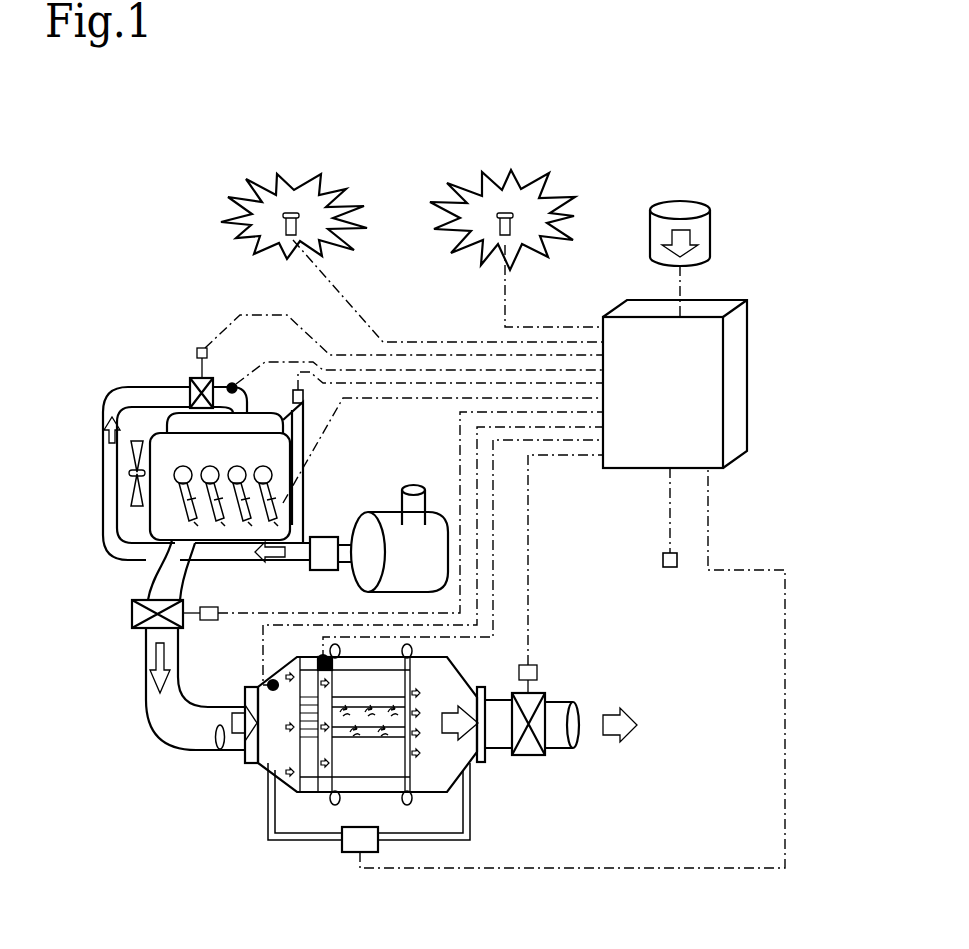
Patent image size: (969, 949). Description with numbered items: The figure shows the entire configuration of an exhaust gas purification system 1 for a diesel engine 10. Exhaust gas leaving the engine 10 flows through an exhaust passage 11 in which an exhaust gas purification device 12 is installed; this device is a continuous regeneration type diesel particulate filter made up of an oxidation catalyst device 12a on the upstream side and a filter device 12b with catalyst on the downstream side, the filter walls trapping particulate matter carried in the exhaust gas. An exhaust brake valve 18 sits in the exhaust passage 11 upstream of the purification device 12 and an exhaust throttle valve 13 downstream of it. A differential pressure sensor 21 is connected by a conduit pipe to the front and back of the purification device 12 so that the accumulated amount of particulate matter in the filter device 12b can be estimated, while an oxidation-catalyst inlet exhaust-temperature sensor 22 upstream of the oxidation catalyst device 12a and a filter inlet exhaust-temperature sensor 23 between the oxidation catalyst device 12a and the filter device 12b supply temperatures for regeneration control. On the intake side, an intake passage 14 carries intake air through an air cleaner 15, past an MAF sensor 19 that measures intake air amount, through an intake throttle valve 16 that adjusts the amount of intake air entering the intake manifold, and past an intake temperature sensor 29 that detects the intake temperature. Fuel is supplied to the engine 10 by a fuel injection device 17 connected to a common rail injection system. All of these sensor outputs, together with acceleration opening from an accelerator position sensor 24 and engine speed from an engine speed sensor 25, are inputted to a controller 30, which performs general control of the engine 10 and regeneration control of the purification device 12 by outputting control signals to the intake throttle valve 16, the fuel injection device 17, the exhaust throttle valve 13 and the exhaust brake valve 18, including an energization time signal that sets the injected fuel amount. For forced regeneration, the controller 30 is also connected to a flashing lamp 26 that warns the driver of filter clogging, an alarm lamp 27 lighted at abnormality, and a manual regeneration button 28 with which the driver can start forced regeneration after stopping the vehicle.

The exhaust gas purification system 1 is at (618, 222).
The diesel engine 10 is at (163, 437).
The exhaust passage 11 is at (172, 733).
The exhaust gas purification device 12 is at (448, 793).
The oxidation catalyst device 12a is at (312, 780).
The filter device with catalyst 12b is at (373, 780).
The exhaust throttle valve 13 is at (537, 695).
The intake passage 14 is at (108, 420).
The air cleaner 15 is at (390, 527).
The intake throttle valve 16 is at (189, 377).
The fuel injection device 17 is at (180, 497).
The exhaust brake valve 18 is at (132, 608).
The MAF sensor 19 is at (326, 537).
The differential pressure sensor 21 is at (353, 838).
The oxidation-catalyst inlet exhaust-temperature sensor 22 is at (270, 683).
The filter inlet exhaust-temperature sensor 23 is at (322, 655).
The accelerator position sensor 24 is at (670, 567).
The engine speed sensor 25 is at (294, 390).
The flashing lamp 26 is at (287, 213).
The alarm lamp 27 is at (503, 213).
The manual regeneration button 28 is at (697, 210).
The intake temperature sensor 29 is at (233, 384).
The controller 30 is at (737, 395).